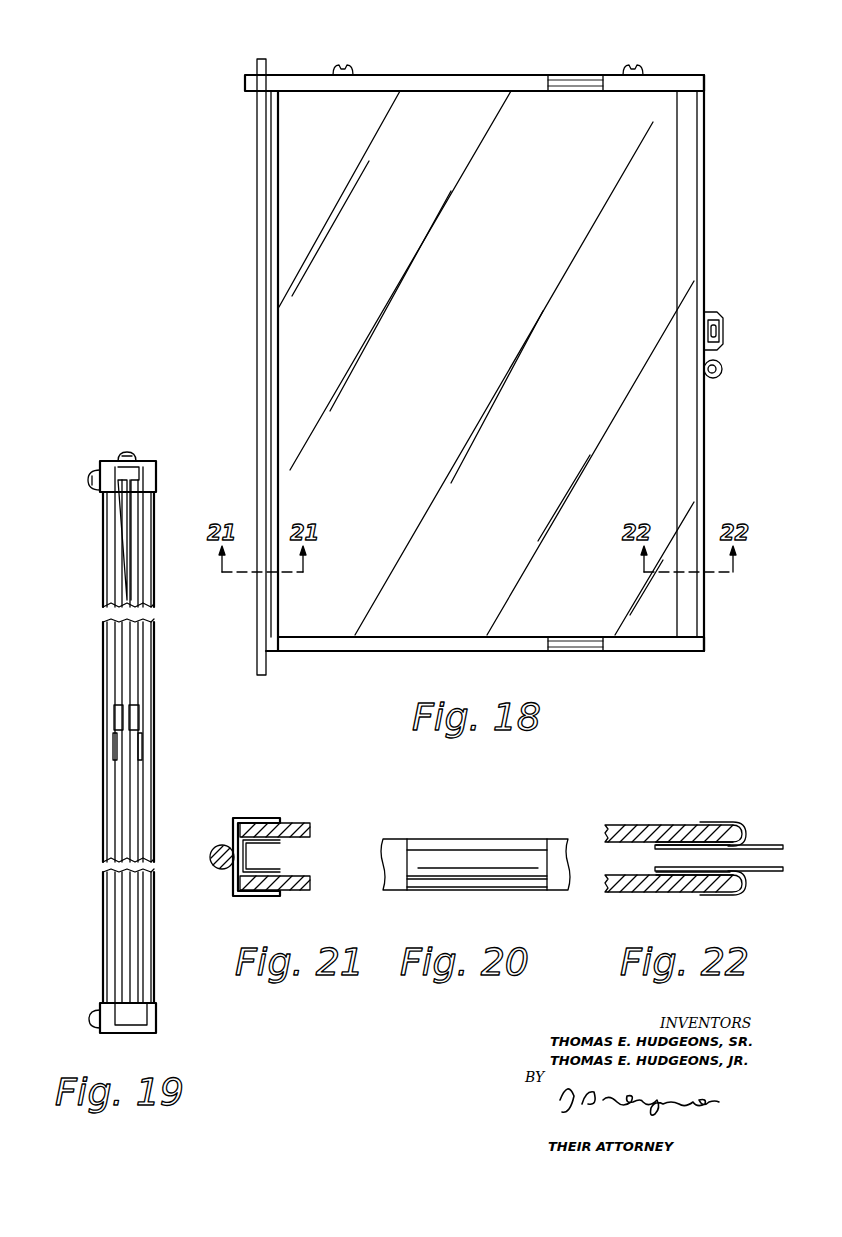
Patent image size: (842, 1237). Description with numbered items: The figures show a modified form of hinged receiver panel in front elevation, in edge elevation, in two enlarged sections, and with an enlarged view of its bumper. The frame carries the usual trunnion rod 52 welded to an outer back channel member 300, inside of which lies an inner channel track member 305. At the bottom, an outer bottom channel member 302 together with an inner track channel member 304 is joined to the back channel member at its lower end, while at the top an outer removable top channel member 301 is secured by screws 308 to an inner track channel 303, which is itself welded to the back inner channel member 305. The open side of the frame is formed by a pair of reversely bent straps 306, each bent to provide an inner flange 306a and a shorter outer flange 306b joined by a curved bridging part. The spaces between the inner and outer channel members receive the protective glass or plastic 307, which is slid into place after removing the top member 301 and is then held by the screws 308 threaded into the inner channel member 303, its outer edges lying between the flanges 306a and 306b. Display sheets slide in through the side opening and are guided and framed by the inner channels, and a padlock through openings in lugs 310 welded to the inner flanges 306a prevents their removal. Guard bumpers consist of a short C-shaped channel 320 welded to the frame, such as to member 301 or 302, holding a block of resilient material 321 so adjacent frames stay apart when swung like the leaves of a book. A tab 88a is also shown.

In FIG. 18, the trunnion rod 52 is at (257, 257).
In FIG. 21, the trunnion rod 52 is at (218, 870).
In FIG. 18, the latch 88a is at (716, 312).
In FIG. 18, the outer back channel member 300 is at (272, 435).
In FIG. 21, the outer back channel member 300 is at (262, 818).
In FIG. 18, the outer removable top channel member 301 is at (298, 75).
In FIG. 19, the outer removable top channel member 301 is at (157, 479).
In FIG. 20, the outer removable top channel member 301 is at (555, 892).
In FIG. 18, the outer bottom channel member 302 is at (357, 652).
In FIG. 19, the outer bottom channel member 302 is at (157, 1023).
In FIG. 19, the inner track channel 303 is at (141, 487).
In FIG. 19, the inner track channel member 304 is at (140, 1015).
In FIG. 21, the inner channel track member 305 is at (282, 850).
In FIG. 18, the reversely bent straps 306 is at (705, 630).
In FIG. 22, the reversely bent straps 306 is at (745, 837).
In FIG. 22, the inner flange 306a is at (697, 840).
In FIG. 22, the outer flange 306b is at (728, 823).
In FIG. 18, the protective glass or plastic 307 is at (548, 458).
In FIG. 21, the protective glass or plastic 307 is at (305, 823).
In FIG. 22, the protective glass or plastic 307 is at (618, 825).
In FIG. 18, the screws 308 is at (346, 72).
In FIG. 18, the lugs 310 is at (722, 378).
In FIG. 22, the lugs 310 is at (762, 849).
In FIG. 19, the short C-shaped channel 320 is at (99, 462).
In FIG. 20, the short C-shaped channel 320 is at (485, 839).
In FIG. 19, the block of resilient material 321 is at (88, 481).